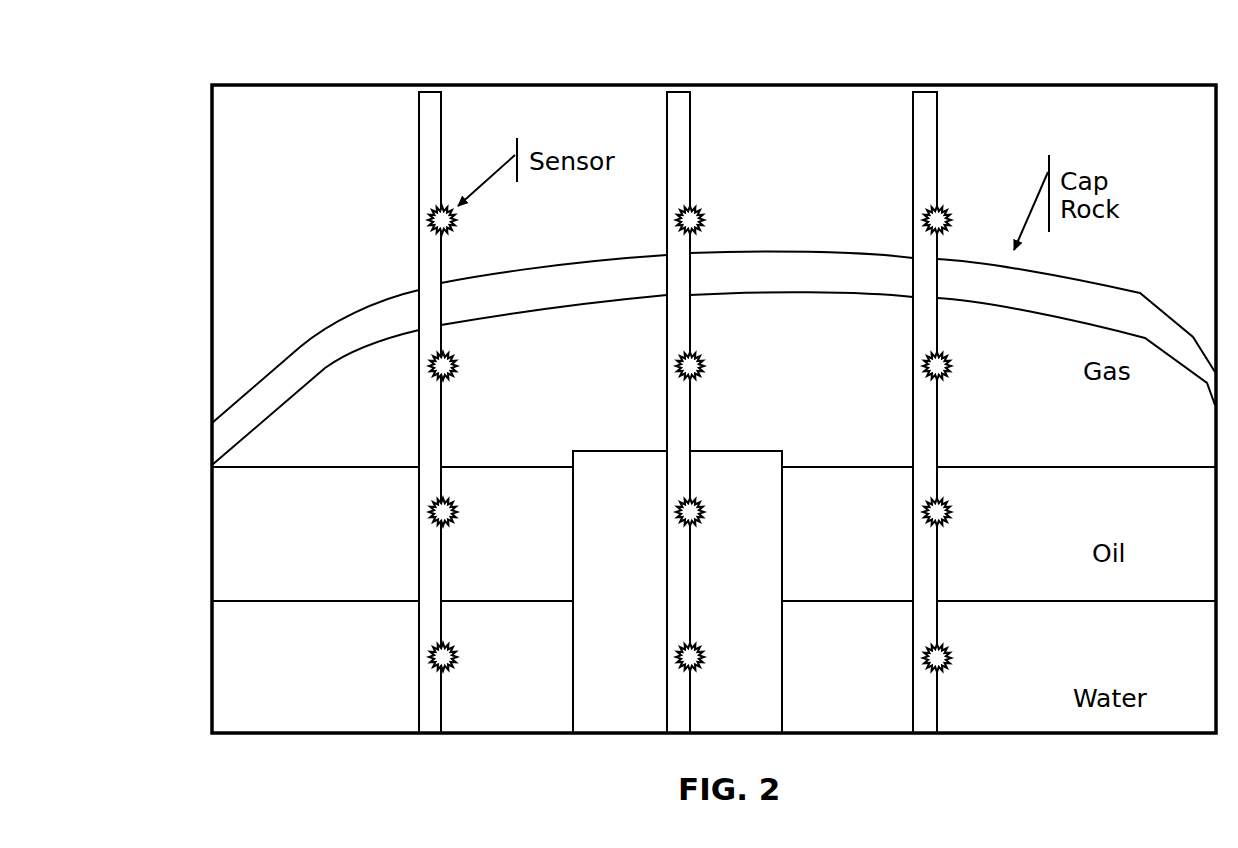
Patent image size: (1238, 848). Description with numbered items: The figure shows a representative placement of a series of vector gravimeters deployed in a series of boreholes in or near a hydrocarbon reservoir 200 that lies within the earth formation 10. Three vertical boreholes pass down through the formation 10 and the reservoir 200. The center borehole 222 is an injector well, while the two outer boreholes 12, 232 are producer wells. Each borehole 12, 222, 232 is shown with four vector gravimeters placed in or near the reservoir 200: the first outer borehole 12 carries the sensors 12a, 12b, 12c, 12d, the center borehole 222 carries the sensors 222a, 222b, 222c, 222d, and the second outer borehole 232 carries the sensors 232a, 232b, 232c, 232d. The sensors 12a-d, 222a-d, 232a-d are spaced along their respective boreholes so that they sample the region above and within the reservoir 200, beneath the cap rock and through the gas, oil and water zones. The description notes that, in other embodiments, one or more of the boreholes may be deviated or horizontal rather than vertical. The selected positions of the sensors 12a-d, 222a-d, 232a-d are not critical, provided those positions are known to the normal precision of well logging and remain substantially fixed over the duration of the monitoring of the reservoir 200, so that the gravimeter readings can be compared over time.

The earth formation 10 is at (1093, 108).
The borehole 12 is at (441, 123).
The vector gravimeter 12a is at (431, 211).
The vector gravimeter 12b is at (458, 362).
The vector gravimeter 12c is at (458, 507).
The vector gravimeter 12d is at (458, 653).
The hydrocarbon reservoir 200 is at (250, 452).
The center borehole 222 is at (690, 123).
The vector gravimeter 222a is at (705, 217).
The vector gravimeter 222b is at (705, 362).
The vector gravimeter 222c is at (705, 507).
The vector gravimeter 222d is at (705, 653).
The borehole 232 is at (937, 123).
The vector gravimeter 232a is at (925, 212).
The vector gravimeter 232b is at (952, 362).
The vector gravimeter 232c is at (952, 507).
The vector gravimeter 232d is at (952, 653).